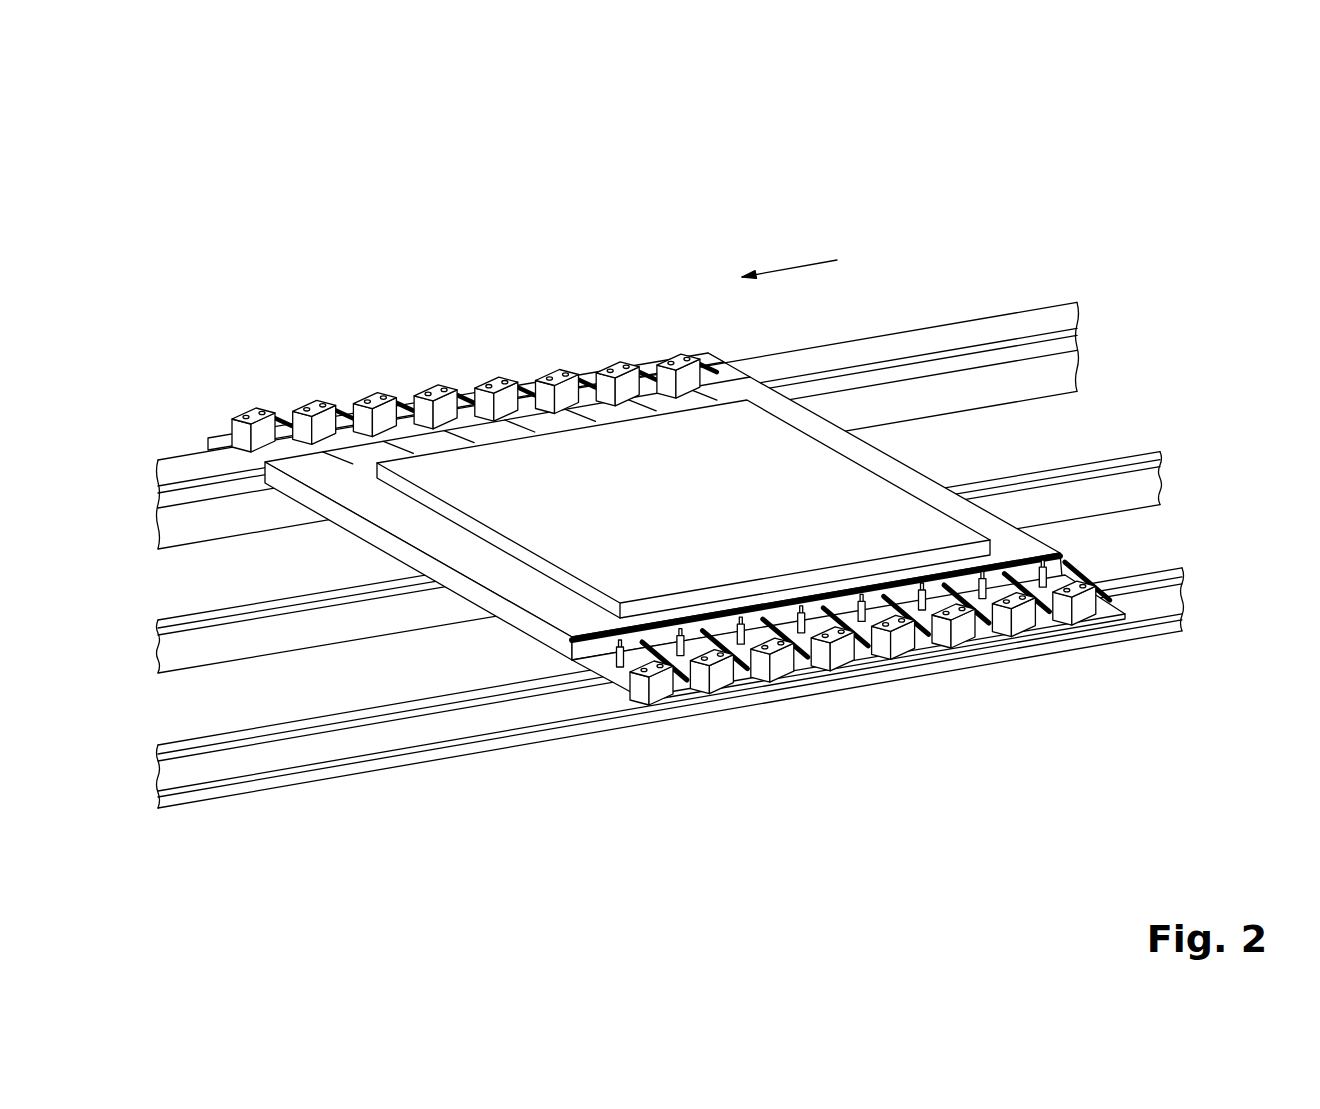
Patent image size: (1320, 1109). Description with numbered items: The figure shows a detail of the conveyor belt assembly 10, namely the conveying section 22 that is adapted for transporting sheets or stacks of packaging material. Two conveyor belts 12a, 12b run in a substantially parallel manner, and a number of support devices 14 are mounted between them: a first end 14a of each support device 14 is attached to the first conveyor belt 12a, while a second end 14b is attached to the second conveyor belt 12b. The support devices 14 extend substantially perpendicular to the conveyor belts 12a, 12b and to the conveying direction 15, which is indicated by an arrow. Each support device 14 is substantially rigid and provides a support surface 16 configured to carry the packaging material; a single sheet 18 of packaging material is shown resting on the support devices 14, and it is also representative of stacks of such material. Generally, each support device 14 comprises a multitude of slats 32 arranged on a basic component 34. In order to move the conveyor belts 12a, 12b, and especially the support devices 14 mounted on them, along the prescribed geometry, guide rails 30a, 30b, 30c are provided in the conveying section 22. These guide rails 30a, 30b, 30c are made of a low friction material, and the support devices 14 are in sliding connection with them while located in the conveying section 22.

The transport system 10 is at (700, 452).
The first conveyor belt 12a is at (383, 737).
The second conveyor belt 12b is at (903, 343).
The support device 14 is at (676, 706).
The first end 14a is at (622, 693).
The second end 14b is at (203, 443).
The conveying direction 15 is at (792, 260).
The support surface 16 is at (297, 451).
The sheet 18 is at (753, 430).
The conveying section 22 is at (955, 295).
The guide rail 30a is at (1050, 320).
The guide rail 30b is at (1137, 455).
The guide rail 30c is at (1170, 572).
The slat 32 is at (572, 657).
The basic component 34 is at (688, 688).